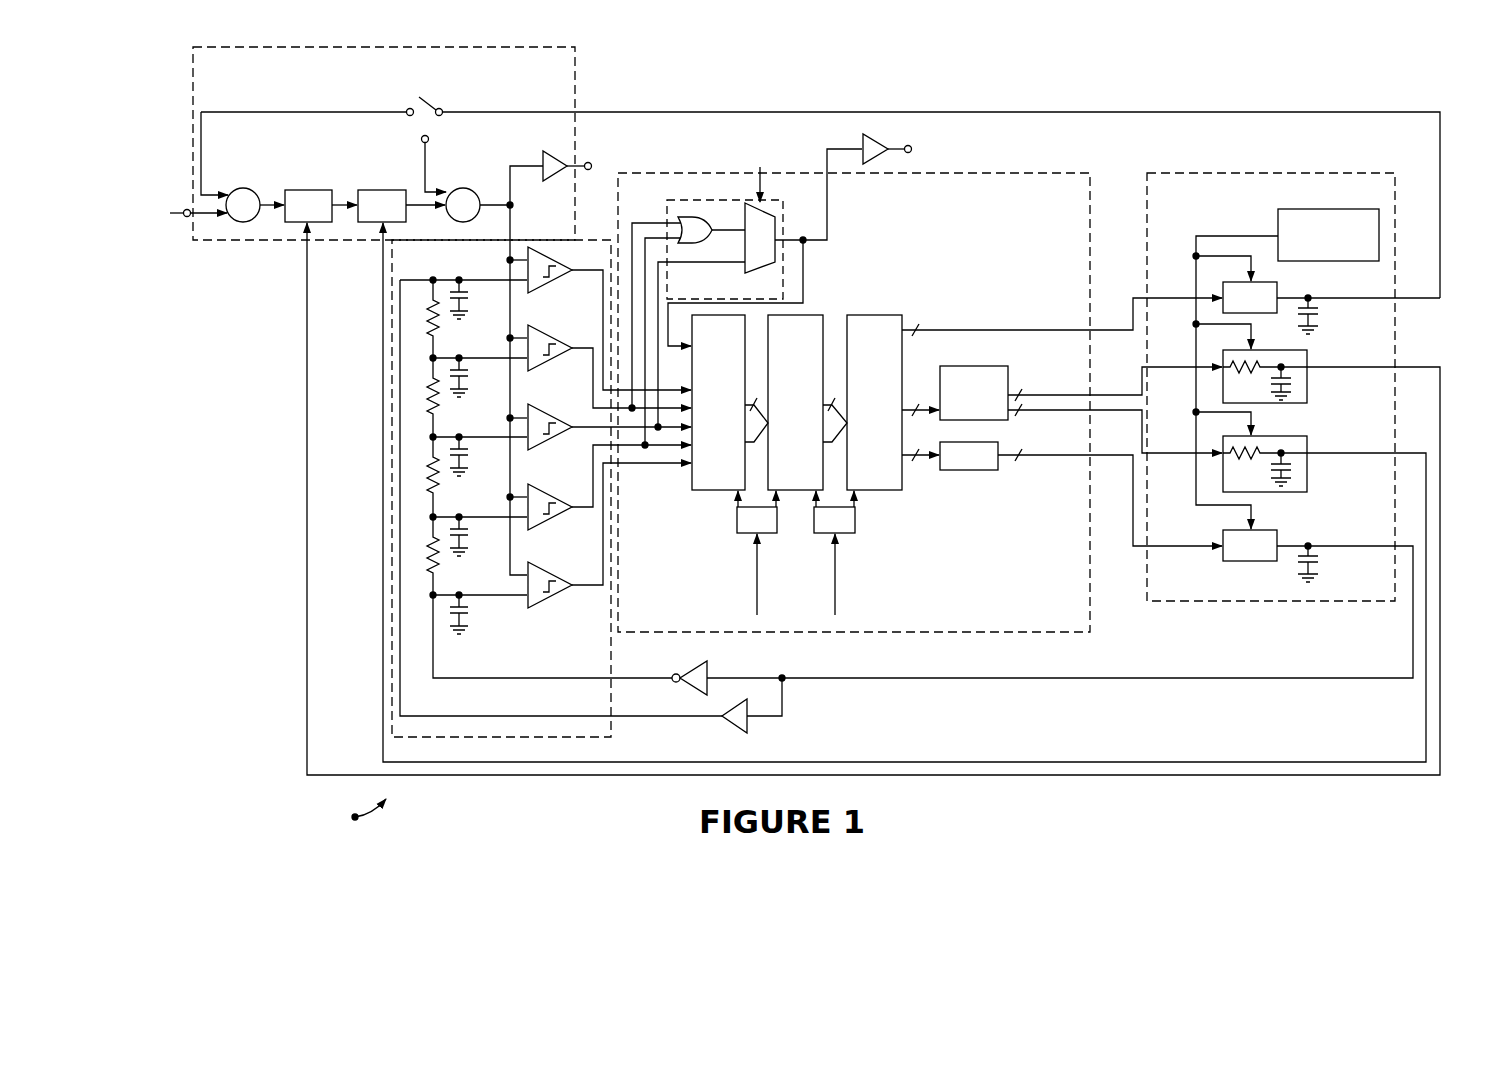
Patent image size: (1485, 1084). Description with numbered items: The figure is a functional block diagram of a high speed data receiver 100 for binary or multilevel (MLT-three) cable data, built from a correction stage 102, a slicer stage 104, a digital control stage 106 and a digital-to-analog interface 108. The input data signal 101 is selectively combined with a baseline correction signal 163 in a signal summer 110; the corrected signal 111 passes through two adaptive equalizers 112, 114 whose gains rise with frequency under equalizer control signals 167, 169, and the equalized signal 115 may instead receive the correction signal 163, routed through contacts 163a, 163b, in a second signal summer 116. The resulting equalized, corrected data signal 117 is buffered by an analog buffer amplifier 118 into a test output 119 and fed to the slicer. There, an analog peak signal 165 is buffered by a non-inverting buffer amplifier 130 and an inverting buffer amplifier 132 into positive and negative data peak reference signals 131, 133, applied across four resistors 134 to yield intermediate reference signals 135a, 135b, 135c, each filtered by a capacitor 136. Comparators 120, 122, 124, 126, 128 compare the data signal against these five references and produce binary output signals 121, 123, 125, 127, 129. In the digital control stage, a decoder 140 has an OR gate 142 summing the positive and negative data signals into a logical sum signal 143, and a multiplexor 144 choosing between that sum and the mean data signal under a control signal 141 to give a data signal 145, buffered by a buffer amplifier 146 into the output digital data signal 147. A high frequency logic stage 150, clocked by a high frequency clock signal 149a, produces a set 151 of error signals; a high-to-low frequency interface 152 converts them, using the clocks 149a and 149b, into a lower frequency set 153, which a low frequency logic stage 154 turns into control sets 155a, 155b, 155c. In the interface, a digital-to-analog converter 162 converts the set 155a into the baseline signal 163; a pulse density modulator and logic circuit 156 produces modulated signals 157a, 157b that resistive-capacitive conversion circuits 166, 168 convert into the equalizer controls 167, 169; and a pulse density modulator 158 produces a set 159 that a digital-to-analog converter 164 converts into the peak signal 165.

The high speed data receiver 100 is at (351, 813).
The input data signal 101 is at (184, 220).
The correction stage 102 is at (577, 82).
The slicer stage 104 is at (613, 737).
The digital control stage 106 is at (1027, 172).
The digital-to-analog interface 108 is at (1237, 173).
The signal summer 110 is at (240, 188).
The corrected signal 111 is at (265, 203).
The adaptive equalizer 112 is at (312, 190).
The adaptive equalizer 114 is at (374, 190).
The equalized signal 115 is at (408, 214).
The signal summer 116 is at (468, 188).
The equalized, corrected data signal 117 is at (513, 232).
The analog buffer amplifier 118 is at (547, 161).
The analog equalized, corrected output data signal 119 is at (587, 171).
The positive peak voltage comparator 120 is at (542, 290).
The binary output signal 121 is at (588, 274).
The positive level comparator 122 is at (541, 369).
The positive data signal 123 is at (592, 356).
The middle comparator 124 is at (541, 448).
The mean data signal 125 is at (600, 424).
The negative level comparator 126 is at (541, 521).
The negative data signal 127 is at (600, 463).
The negative peak voltage comparator 128 is at (543, 600).
The binary output signal 129 is at (603, 582).
The non-inverting buffer amplifier 130 is at (733, 729).
The positive data peak reference signal 131 is at (449, 716).
The inverting buffer amplifier 132 is at (700, 666).
The negative data peak reference signal 133 is at (478, 678).
The resistor 134 is at (437, 340).
The positive reference signal 135a is at (431, 358).
The middle reference signal 135b is at (431, 437).
The negative reference signal 135c is at (431, 517).
The capacitor 136 is at (468, 296).
The decoder 140 is at (691, 200).
The control signal 141 is at (765, 180).
The OR gate 142 is at (678, 216).
The logical sum signal 143 is at (716, 226).
The multiplexor 144 is at (755, 272).
The data signal 145 is at (804, 236).
The buffer amplifier 146 is at (870, 138).
The output digital data signal 147 is at (910, 145).
The high frequency clock signal 149a is at (756, 578).
The low frequency clock signal 149b is at (836, 578).
The high frequency logic stage 150 is at (695, 493).
The set of digital signals 151 is at (752, 490).
The high-to-low frequency interface 152 is at (812, 314).
The set of lower frequency error signals 153 is at (830, 490).
The low frequency logic stage 154 is at (863, 314).
The set of control signals 155a is at (912, 322).
The set of control signals 155b is at (918, 400).
The set of control signals 155c is at (914, 466).
The pulse density modulator and logic circuit 156 is at (978, 365).
The pulse density modulated control signal 157a is at (1050, 393).
The pulse density modulated control signal 157b is at (1057, 413).
The pulse density modulator 158 is at (970, 472).
The set of pulse density modulated signals 159 is at (1025, 462).
The digital-to-analog converter 162 is at (1278, 291).
The baseline wander control signal 163 is at (1340, 300).
The BLW switch contact 163a is at (407, 110).
The BLW switch contact 163b is at (421, 141).
The digital-to-analog converter 164 is at (1277, 530).
The analog peak signal 165 is at (1340, 552).
The resistive-capacitive digital-to-analog conversion circuit 166 is at (1309, 372).
The equalizer control signal 167 is at (1352, 369).
The resistive-capacitive digital-to-analog conversion circuit 168 is at (1309, 458).
The equalizer control signal 169 is at (1343, 452).